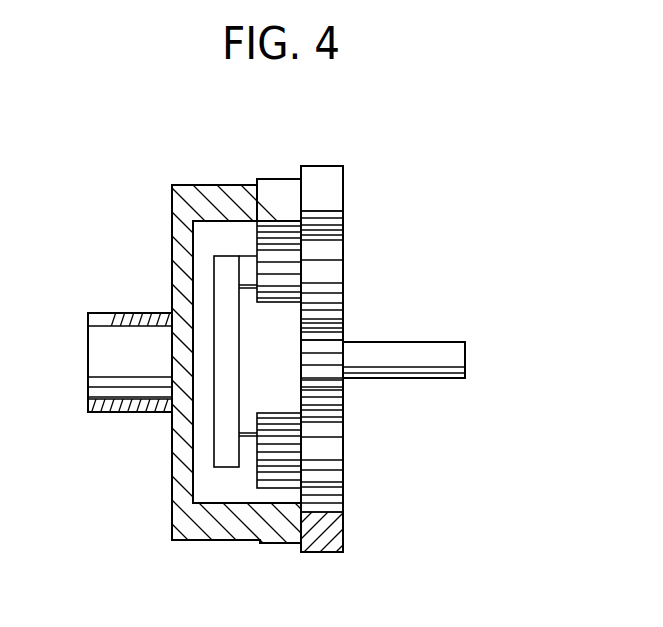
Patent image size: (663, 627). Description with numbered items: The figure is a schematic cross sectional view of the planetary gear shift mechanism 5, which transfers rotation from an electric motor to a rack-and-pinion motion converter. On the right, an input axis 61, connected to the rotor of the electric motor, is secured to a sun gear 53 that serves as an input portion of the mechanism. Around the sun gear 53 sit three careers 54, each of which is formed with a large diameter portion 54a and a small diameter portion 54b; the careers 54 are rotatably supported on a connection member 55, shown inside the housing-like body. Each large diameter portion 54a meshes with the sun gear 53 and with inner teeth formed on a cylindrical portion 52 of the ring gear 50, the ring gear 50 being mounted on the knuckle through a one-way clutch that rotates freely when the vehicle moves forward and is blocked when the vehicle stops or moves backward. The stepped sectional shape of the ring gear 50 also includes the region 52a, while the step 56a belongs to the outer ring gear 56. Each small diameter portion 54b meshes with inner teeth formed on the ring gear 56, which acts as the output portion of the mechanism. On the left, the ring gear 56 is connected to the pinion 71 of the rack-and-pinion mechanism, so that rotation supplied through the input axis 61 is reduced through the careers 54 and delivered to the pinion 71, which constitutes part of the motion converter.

The planetary gear shift mechanism 5 is at (165, 191).
The ring gear 50 is at (342, 163).
The cylindrical portion 52 is at (332, 192).
The plate portion 52a is at (333, 218).
The sun gear 53 is at (330, 348).
The career 54 is at (348, 452).
The large diameter portion 54a is at (328, 278).
The small diameter portion 54b is at (283, 272).
The connection member 55 is at (215, 417).
The ring gear 56 is at (203, 202).
The housing projection 56a is at (257, 228).
The input axis 61 is at (428, 369).
The pinion 71 is at (120, 318).